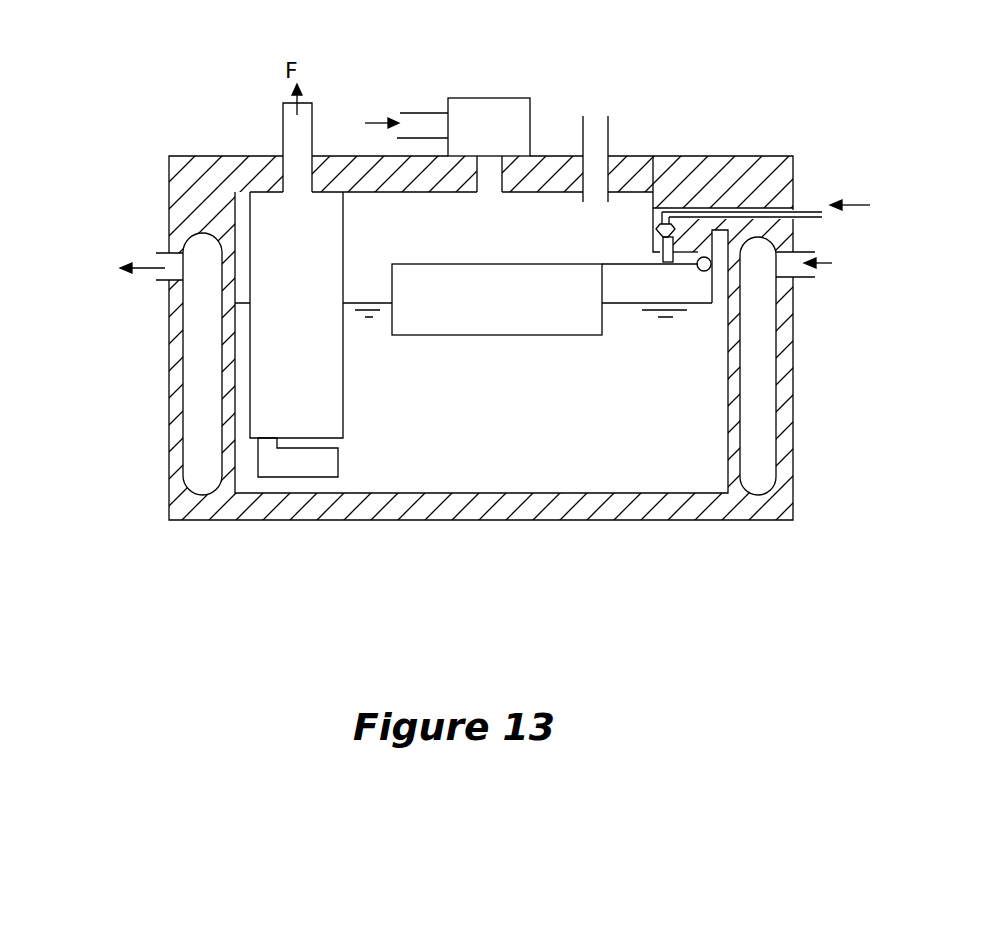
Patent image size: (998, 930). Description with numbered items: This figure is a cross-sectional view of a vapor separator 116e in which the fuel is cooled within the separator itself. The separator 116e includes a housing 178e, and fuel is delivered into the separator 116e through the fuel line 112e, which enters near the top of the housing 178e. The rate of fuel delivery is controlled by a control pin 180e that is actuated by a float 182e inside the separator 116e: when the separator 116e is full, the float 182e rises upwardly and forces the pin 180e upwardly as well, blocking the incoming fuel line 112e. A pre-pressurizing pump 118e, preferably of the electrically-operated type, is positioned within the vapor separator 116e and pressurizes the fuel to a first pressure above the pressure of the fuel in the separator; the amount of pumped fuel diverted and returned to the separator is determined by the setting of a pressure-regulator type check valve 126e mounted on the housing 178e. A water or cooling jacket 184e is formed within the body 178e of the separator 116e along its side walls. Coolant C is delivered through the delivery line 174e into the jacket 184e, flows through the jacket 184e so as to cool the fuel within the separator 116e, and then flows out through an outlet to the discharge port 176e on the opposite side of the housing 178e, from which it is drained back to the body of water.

The vapor separator 116e is at (788, 123).
The discharge port 176e is at (165, 243).
The pressure-regulator type check valve 126e is at (495, 100).
The housing 178e is at (665, 200).
The fuel line 112e is at (810, 220).
The delivery line 174e is at (805, 280).
The control pin 180e is at (668, 265).
The cooling jacket 184e is at (196, 437).
The float 182e is at (489, 323).
The pre-pressurizing pump 118e is at (263, 417).